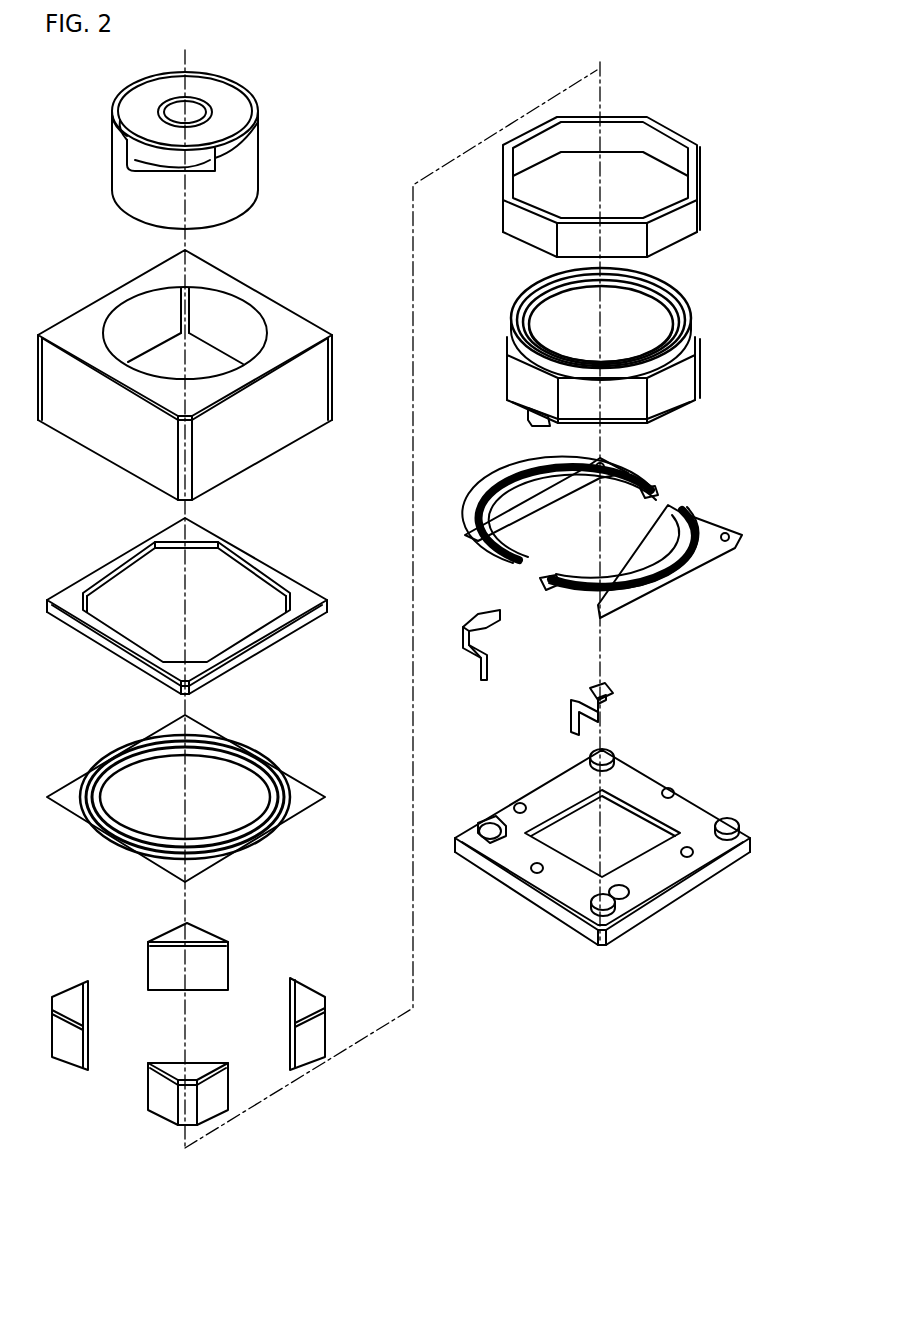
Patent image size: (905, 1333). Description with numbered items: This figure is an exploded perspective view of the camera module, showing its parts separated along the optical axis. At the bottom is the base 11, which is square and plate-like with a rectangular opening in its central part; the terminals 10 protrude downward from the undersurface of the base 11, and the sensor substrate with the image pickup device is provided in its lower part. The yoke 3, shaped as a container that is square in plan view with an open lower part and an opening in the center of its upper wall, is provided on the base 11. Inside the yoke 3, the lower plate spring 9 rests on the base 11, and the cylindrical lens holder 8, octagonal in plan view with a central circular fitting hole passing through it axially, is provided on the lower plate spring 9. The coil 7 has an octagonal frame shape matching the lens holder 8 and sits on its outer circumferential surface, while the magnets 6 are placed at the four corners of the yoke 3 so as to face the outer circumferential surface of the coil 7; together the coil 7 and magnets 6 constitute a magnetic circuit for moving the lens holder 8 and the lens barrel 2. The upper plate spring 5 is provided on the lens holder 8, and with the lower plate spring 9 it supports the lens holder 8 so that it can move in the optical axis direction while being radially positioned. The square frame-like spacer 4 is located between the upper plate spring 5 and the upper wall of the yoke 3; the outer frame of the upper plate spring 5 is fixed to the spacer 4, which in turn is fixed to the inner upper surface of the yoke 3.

The lens barrel 2 is at (275, 92).
The yoke 3 is at (342, 272).
The spacer 4 is at (342, 540).
The upper plate spring 5 is at (340, 757).
The magnets 6 is at (343, 958).
The coil 7 is at (714, 122).
The lens holder 8 is at (762, 300).
The lower plate spring 9 is at (755, 477).
The terminals 10 is at (637, 659).
The base 11 is at (748, 762).